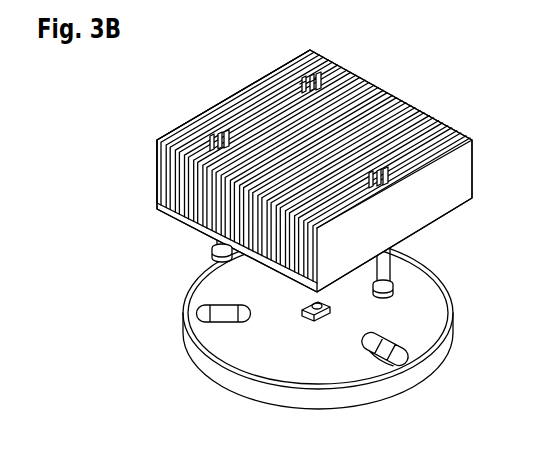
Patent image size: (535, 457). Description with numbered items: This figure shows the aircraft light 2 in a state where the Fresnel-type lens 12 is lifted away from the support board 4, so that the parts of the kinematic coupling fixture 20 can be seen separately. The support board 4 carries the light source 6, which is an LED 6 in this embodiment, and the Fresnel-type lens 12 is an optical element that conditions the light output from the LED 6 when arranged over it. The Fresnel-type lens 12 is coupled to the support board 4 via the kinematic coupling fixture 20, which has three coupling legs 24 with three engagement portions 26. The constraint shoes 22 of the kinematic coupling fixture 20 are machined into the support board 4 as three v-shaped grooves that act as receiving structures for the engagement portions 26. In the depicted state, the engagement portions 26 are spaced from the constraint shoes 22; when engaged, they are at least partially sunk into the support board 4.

The aircraft light 2 is at (128, 371).
The kinematic coupling fixture 20 is at (127, 290).
The support board 4 is at (268, 391).
The light source 6 is at (323, 319).
The Fresnel-type lens 12 is at (390, 94).
The constraint shoes 22 is at (210, 322).
The coupling legs 24 is at (217, 241).
The engagement portions 26 is at (212, 252).